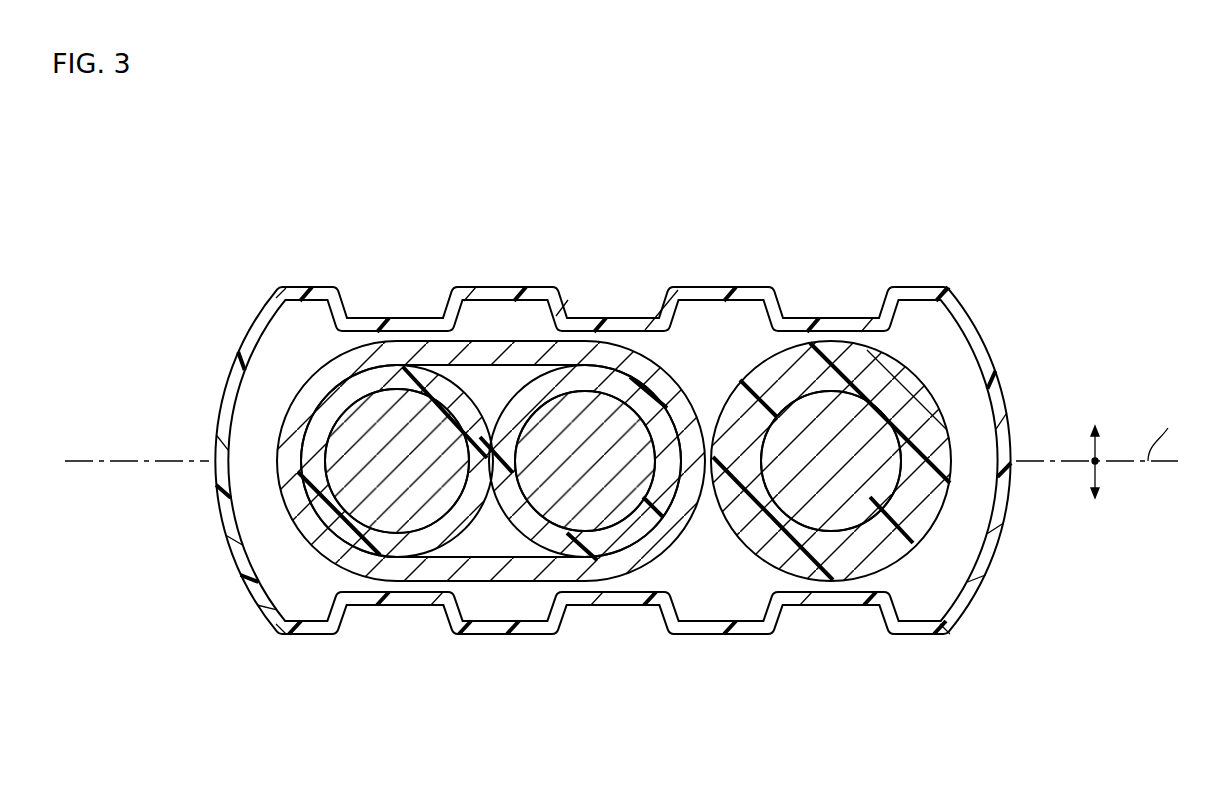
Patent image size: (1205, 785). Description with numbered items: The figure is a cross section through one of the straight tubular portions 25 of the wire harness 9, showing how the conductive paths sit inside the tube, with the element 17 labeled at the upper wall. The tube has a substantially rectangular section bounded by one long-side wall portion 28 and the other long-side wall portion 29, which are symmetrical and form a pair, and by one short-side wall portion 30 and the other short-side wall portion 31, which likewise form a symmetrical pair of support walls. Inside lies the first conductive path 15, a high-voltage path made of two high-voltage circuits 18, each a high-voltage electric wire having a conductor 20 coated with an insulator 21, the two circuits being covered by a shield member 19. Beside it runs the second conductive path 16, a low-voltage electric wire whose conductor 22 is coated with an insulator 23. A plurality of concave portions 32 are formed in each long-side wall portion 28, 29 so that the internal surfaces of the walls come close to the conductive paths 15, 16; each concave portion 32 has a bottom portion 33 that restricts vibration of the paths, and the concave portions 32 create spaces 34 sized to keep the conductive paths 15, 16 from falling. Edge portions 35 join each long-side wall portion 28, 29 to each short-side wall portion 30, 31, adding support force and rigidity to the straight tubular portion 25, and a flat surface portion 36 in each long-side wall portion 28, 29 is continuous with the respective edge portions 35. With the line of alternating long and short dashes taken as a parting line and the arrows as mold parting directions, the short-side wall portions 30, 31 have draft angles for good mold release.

The wire harness 9 is at (688, 204).
The first conductive path 15 is at (300, 366).
The second conductive path 16 is at (922, 365).
The sheath 17 is at (752, 284).
The high-voltage circuit 18 is at (148, 513).
The shield member 19 is at (328, 549).
The conductor 20 is at (327, 484).
The insulator 21 is at (327, 512).
The conductor 22 is at (872, 497).
The insulator 23 is at (889, 559).
The straight tubular portion 25 is at (681, 288).
The one long-side wall portion 28 is at (470, 623).
The other long-side wall portion 29 is at (517, 289).
The one short-side wall portion 30 is at (232, 385).
The other short-side wall portion 31 is at (990, 381).
The concave portion 32 is at (377, 314).
The bottom portion 33 is at (411, 317).
The space 34 is at (299, 300).
The edge portion 35 is at (279, 289).
The flat surface portion 36 is at (291, 288).